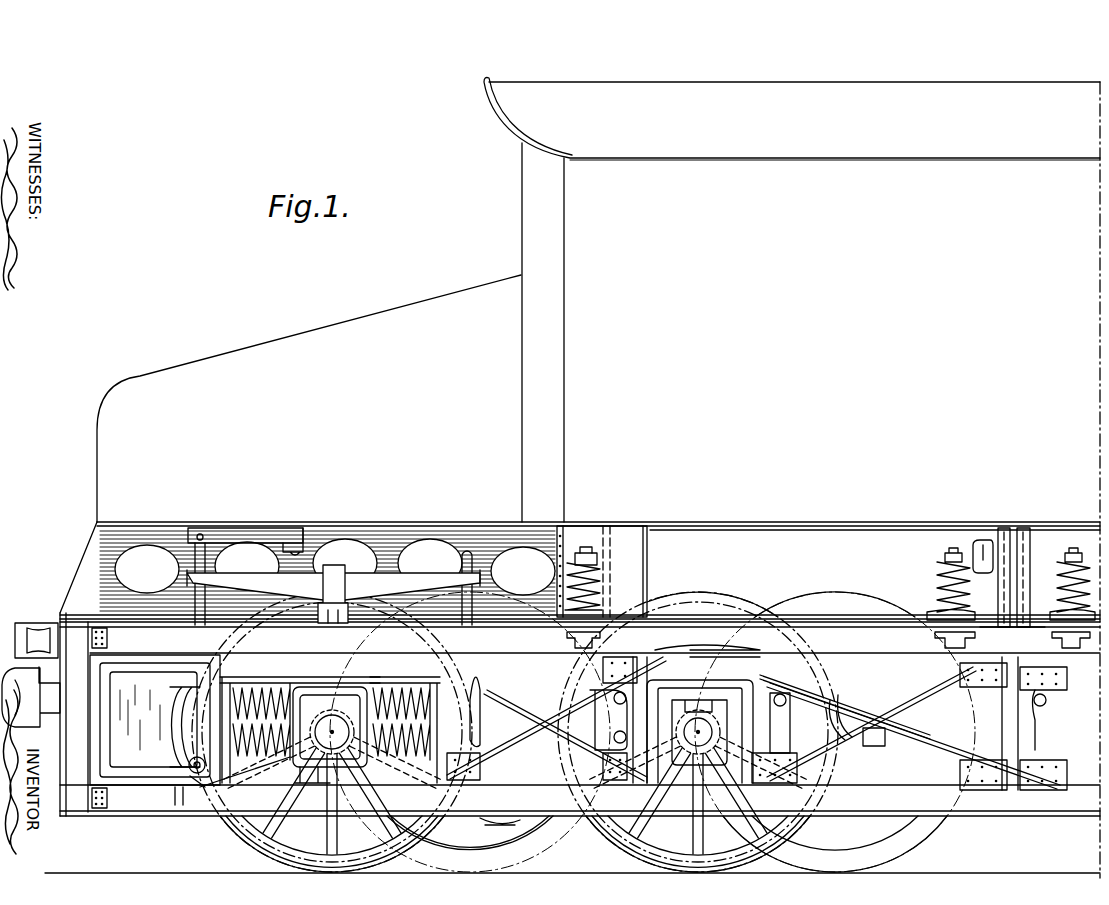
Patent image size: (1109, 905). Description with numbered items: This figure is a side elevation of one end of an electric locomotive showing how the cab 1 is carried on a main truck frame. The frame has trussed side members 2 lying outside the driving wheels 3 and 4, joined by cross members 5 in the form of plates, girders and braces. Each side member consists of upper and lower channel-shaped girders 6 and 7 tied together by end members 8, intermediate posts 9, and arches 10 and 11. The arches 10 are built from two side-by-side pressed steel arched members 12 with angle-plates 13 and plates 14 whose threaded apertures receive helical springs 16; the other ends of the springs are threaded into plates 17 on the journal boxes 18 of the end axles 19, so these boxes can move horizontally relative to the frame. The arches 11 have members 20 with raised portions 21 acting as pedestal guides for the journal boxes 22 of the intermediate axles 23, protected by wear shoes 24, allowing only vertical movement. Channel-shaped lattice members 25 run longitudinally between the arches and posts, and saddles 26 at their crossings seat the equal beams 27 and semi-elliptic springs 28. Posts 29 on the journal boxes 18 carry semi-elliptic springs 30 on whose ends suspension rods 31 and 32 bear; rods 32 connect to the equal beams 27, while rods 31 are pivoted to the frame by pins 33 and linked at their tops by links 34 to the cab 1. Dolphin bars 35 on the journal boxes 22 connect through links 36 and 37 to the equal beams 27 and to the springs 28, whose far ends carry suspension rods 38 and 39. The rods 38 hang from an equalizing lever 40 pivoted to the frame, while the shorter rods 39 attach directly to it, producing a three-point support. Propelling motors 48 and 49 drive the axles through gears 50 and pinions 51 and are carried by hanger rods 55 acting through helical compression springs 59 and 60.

The cab 1 is at (598, 478).
The trussed side members 2 is at (133, 668).
The driving wheels 3 is at (401, 732).
The driving wheels 4 is at (765, 850).
The cross members 5 is at (1022, 530).
The upper channel-shaped girders 6 is at (580, 669).
The lower channel-shaped girders 7 is at (572, 829).
The end members 8 is at (68, 741).
The intermediate posts 9 is at (1004, 790).
The arches 10 is at (178, 692).
The arches 11 is at (830, 680).
The pressed steel arched members 12 is at (182, 762).
The angle-plates 13 is at (183, 782).
The plates 14 is at (287, 755).
The helical springs 16 is at (330, 730).
The plates 17 is at (312, 745).
The journal boxes 18 is at (315, 770).
The axles 19 is at (300, 770).
The members 20 is at (585, 826).
The raised portions 21 is at (615, 790).
The journal boxes 22 is at (685, 767).
The axles 23 is at (700, 762).
The shoes 24 is at (645, 828).
The channel-shaped lattice members 25 is at (905, 700).
The saddles 26 is at (922, 750).
The equal beams 27 is at (542, 718).
The semi-elliptic springs 28 is at (893, 747).
The posts 29 is at (322, 622).
The semi-elliptic springs 30 is at (370, 577).
The suspension rods 31 is at (194, 640).
The suspension rods 32 is at (480, 638).
The pins 33 is at (197, 773).
The links 34 is at (243, 540).
The dolphin bars 35 is at (710, 650).
The links 36 is at (608, 720).
The links 37 is at (784, 713).
The suspension rods 38 is at (950, 690).
The suspension rods 39 is at (1052, 790).
The equalizing lever 40 is at (985, 543).
The propelling motor 48 is at (485, 597).
The propelling motor 49 is at (863, 607).
The gears 50 is at (790, 806).
The pinions 51 is at (845, 705).
The hanger rods 55 is at (603, 590).
The helical compression springs 59 is at (1075, 557).
The helical compression springs 60 is at (1056, 643).